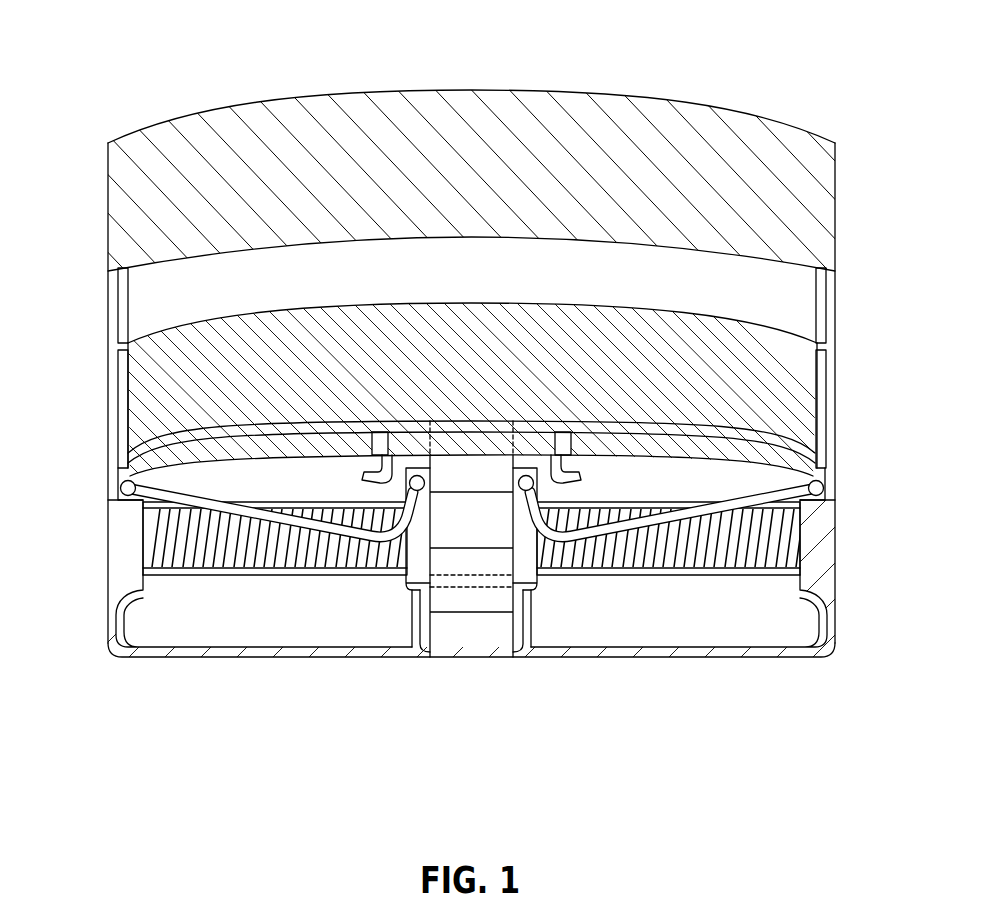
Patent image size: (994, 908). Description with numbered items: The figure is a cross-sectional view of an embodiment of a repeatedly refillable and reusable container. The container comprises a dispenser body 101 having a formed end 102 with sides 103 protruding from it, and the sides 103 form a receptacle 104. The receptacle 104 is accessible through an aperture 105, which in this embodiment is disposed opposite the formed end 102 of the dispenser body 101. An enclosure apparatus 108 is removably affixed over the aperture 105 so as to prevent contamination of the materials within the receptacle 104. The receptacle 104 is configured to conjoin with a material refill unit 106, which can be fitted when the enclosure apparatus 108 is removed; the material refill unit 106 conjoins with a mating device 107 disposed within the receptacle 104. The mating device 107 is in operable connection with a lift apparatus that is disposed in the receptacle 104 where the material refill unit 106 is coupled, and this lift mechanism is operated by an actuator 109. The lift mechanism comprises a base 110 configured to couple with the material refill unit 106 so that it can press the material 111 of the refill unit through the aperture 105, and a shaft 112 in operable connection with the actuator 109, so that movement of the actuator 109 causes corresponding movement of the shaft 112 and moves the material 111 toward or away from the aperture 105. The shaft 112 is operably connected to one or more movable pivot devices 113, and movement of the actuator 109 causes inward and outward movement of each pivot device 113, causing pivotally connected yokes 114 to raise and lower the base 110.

The dispenser body 101 is at (832, 654).
The formed end 102 is at (762, 658).
The sides 103 is at (837, 447).
The receptacle 104 is at (118, 368).
The aperture 105 is at (158, 210).
The material refill unit 106 is at (122, 462).
The mating device 107 is at (823, 484).
The enclosure apparatus 108 is at (313, 98).
The actuator 109 is at (457, 660).
The base 110 is at (126, 471).
The material 111 is at (793, 378).
The shaft 112 is at (278, 578).
The pivot device 113 is at (412, 591).
The yoke 114 is at (208, 503).